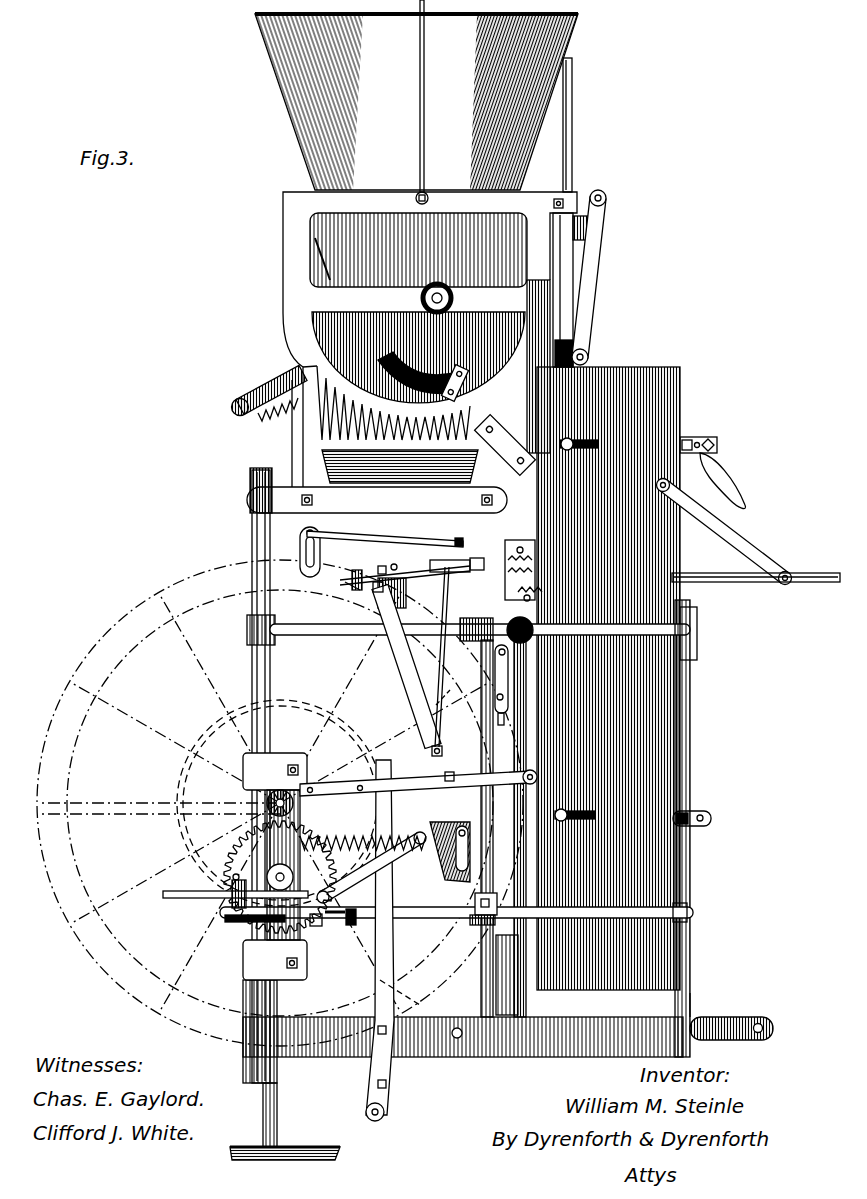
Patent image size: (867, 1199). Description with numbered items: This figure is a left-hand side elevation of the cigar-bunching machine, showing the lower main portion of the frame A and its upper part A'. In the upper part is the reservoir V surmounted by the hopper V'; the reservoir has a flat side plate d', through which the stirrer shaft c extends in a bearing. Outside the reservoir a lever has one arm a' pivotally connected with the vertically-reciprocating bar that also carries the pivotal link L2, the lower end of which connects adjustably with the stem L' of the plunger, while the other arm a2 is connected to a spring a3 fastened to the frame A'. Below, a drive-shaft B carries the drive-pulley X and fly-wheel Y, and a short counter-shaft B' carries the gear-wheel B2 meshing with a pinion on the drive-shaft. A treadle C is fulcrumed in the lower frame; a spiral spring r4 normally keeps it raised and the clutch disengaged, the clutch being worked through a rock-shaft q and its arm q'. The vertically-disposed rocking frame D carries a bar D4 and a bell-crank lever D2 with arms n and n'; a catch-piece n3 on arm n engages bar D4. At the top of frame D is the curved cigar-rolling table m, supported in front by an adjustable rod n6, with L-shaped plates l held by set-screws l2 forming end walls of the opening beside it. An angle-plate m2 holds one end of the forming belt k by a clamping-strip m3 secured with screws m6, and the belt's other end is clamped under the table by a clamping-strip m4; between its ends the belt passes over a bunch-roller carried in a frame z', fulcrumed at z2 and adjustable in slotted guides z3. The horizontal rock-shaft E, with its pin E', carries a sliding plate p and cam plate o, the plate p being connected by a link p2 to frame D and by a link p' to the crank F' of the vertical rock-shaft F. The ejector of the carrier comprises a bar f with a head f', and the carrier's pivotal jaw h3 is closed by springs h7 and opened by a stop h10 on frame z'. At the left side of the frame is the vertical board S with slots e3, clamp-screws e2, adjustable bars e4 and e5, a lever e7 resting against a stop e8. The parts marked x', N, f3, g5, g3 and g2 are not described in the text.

The hopper V' is at (416, 102).
The stem of plunger L' is at (580, 212).
The arm of lever a a' is at (603, 224).
The pivotal link L2 is at (600, 281).
The side plate of reservoir d' is at (418, 250).
The stirrer shaft c is at (444, 291).
The upper part of frame A' is at (357, 352).
The reservoir V is at (418, 357).
The arm of lever a a2 is at (270, 392).
The spring a3 is at (320, 425).
The clamp-screws e2 is at (577, 433).
The elongated slots e3 is at (592, 441).
The adjustable bar e4 is at (712, 813).
The adjustable bar e5 is at (698, 441).
The stop e8 is at (714, 445).
The lever e7 is at (733, 479).
The vertical board S is at (652, 519).
The lever x' is at (724, 532).
The rod N is at (815, 573).
The slotted guides z3 is at (300, 546).
The fulcrum of roller frame z2 is at (438, 541).
The roller frame z' is at (471, 535).
The clamping-strip m3 is at (375, 561).
The set-screws l2 is at (384, 566).
The forming belt k is at (395, 562).
The screws m6 is at (352, 572).
The angle-plate m2 is at (345, 580).
The cigar-rolling table m is at (452, 574).
The clamping-strip m4 is at (472, 568).
The L-shaped plates l is at (407, 592).
The stop h10 is at (520, 555).
The pivotal jaw h3 is at (533, 568).
The springs h7 is at (531, 596).
The fly-wheel Y is at (92, 662).
The drive-pulley X is at (296, 706).
The rocking frame D is at (408, 690).
The bar D4 is at (470, 706).
The rod n6 is at (445, 698).
The bell-crank lever D2 is at (392, 858).
The ejector head f' is at (528, 679).
The pin f3 is at (510, 690).
The ejector bar f is at (525, 731).
The drive-shaft B is at (252, 866).
The hub g5 is at (265, 804).
The gear-wheel B2 is at (240, 852).
The cam plate o is at (232, 877).
The spiral spring r4 is at (362, 838).
The lever g3 is at (345, 788).
The catch-piece n3 is at (440, 766).
The arm of bell-crank lever n is at (456, 837).
The arm of bell-crank lever n' is at (489, 868).
The pin E' is at (235, 905).
The horizontal rock-shaft E is at (213, 912).
The counter-shaft B' is at (245, 936).
The sliding plate p is at (314, 932).
The link p2 is at (333, 919).
The link p' is at (355, 934).
The crank F' is at (466, 939).
The vertical rock-shaft F is at (526, 975).
The link g2 is at (376, 981).
The lower main portion of frame A is at (726, 1001).
The treadle C is at (738, 1022).
The arm q' is at (470, 1036).
The rock-shaft q is at (368, 1126).